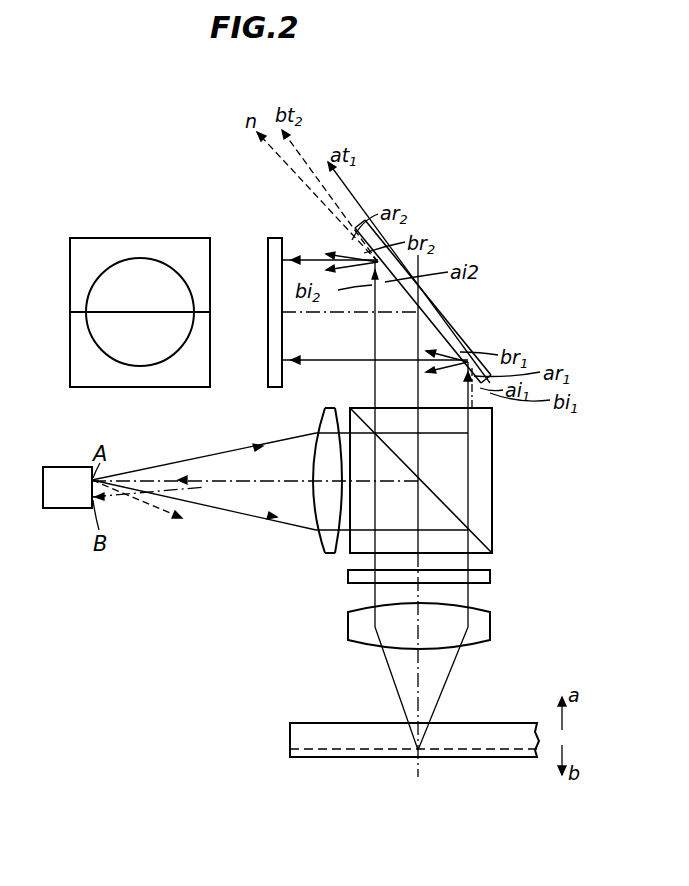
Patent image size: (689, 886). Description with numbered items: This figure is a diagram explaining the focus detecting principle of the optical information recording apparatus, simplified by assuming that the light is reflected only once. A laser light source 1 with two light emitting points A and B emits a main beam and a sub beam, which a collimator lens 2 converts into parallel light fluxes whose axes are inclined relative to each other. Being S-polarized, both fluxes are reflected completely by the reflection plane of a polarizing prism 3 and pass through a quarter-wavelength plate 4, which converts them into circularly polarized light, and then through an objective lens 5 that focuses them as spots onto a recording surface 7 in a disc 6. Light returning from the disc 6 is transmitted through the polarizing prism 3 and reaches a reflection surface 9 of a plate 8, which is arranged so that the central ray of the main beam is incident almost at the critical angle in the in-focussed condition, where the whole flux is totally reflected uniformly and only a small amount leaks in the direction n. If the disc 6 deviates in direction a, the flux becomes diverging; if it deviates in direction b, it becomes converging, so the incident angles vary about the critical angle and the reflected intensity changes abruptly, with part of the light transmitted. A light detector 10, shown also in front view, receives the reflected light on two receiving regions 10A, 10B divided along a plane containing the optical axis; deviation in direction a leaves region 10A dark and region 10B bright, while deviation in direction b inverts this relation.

The laser light source 1 is at (68, 470).
The collimator lens 2 is at (322, 420).
The polarizing prism 3 is at (483, 438).
The quarter-wavelength plate 4 is at (490, 576).
The objective lens 5 is at (490, 628).
The disc 6 is at (483, 728).
The recording surface 7 is at (512, 752).
The first surface of tilted plate 8 is at (428, 318).
The reflection surface 9 is at (456, 337).
The light detector 10 is at (268, 245).
The receiving region 10A is at (134, 373).
The receiving region 10B is at (146, 250).